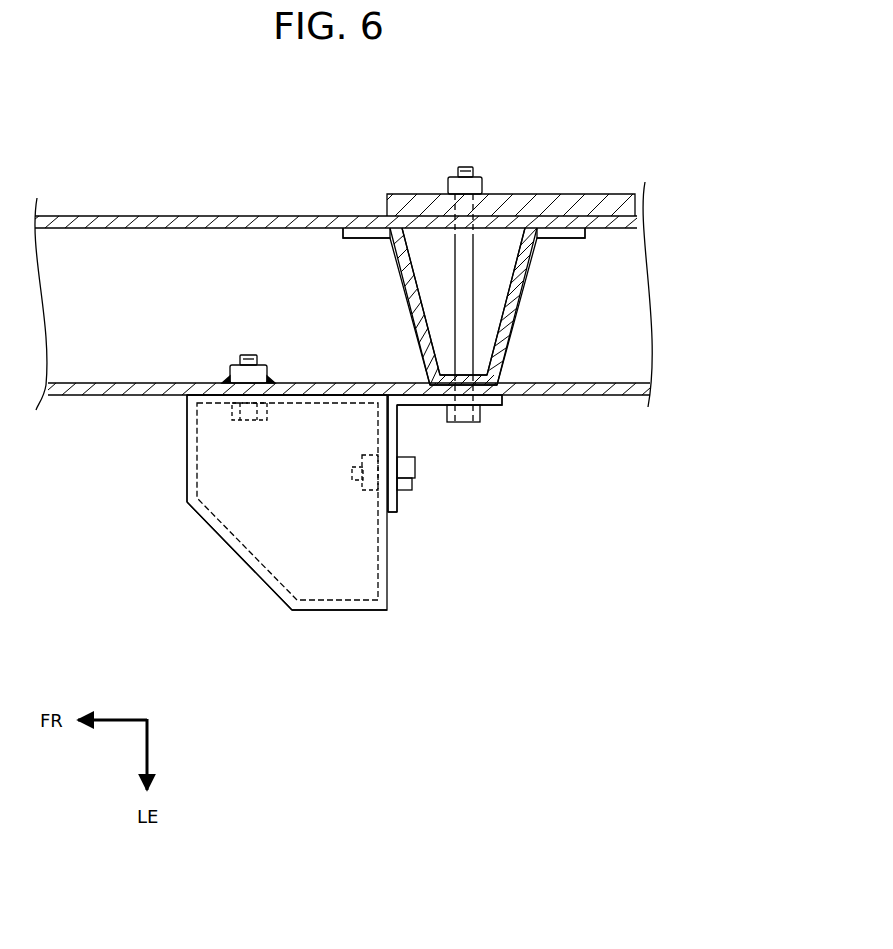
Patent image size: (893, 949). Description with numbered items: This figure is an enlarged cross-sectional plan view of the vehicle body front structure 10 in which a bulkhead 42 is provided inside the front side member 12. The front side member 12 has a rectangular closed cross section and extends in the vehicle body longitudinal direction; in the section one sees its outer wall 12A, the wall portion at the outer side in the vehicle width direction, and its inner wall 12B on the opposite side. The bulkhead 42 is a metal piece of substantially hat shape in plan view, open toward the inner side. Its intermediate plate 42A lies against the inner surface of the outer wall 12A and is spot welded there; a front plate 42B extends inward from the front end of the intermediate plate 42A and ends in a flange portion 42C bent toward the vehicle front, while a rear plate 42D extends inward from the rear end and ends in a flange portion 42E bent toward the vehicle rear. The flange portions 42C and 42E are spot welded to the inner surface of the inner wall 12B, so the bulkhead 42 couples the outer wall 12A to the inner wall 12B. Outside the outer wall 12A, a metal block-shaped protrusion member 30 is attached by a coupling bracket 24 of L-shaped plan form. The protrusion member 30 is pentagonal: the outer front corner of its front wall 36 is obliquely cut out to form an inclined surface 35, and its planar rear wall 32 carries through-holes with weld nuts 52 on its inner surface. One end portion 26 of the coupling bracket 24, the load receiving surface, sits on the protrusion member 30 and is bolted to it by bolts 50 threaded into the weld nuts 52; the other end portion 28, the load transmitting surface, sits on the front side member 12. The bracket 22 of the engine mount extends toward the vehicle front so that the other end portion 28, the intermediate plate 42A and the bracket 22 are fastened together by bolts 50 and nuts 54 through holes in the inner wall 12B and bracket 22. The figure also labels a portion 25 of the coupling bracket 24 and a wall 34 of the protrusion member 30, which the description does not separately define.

The vehicle lower structure 10 is at (378, 701).
The front side member 12 is at (108, 213).
The outer wall 12A is at (73, 397).
The inner wall 12B is at (178, 214).
The bracket 22 is at (574, 205).
The coupling bracket 24 is at (424, 407).
The vertical wall of bracket 25 is at (401, 406).
The one end portion (load receiving surface) 26 is at (394, 508).
The other end portion (load transmitting surface) 28 is at (504, 401).
The protrusion member 30 is at (307, 614).
The rear wall 32 is at (392, 598).
The upper wall of bracket 34 is at (200, 384).
The inclined surface 35 is at (238, 556).
The front wall 36 is at (185, 452).
The bulkhead 42 is at (506, 350).
The intermediate plate 42A is at (489, 386).
The front plate 42B is at (412, 300).
The flange portion 42C is at (352, 240).
The rear plate 42D is at (520, 305).
The flange portion 42E is at (573, 240).
The bolt 50 is at (242, 425).
The weld nut 52 is at (233, 368).
The nut 54 is at (454, 184).